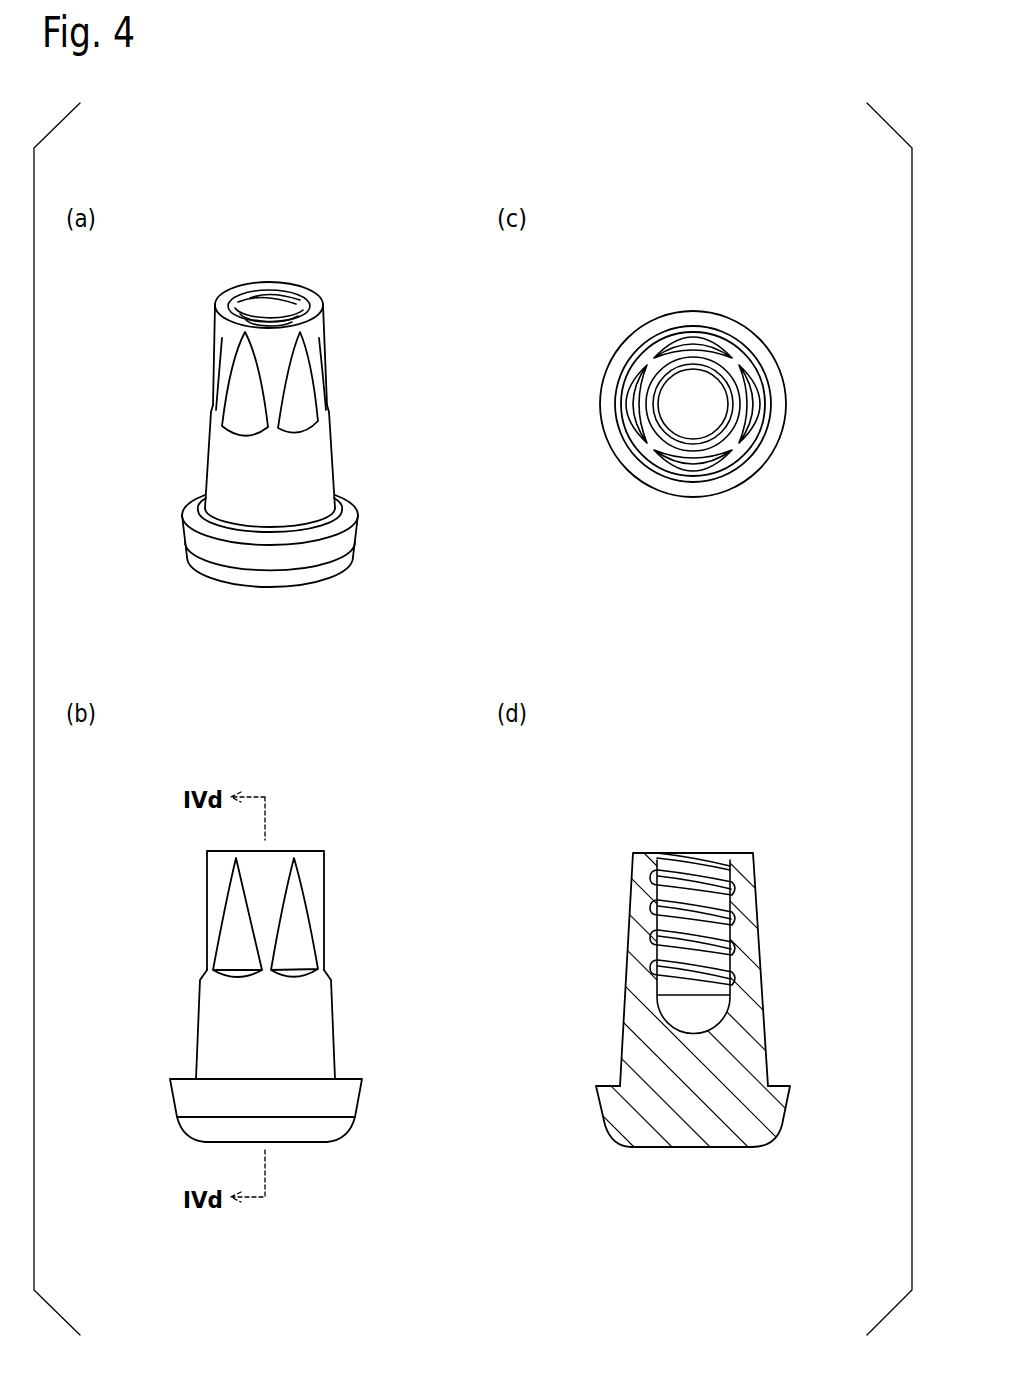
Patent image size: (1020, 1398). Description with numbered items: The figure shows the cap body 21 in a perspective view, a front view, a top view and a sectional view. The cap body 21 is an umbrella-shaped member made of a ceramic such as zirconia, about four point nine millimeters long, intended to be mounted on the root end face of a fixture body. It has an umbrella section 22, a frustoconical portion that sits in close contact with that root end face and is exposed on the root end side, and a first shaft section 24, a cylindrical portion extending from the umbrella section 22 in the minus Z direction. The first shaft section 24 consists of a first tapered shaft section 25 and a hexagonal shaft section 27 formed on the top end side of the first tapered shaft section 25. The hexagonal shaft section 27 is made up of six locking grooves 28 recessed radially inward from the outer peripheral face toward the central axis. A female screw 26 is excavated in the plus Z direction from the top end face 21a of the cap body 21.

The cap body 21 is at (558, 699).
The top end face 21a is at (748, 386).
The umbrella section 22 is at (308, 560).
The first shaft section 24 is at (558, 739).
The first tapered shaft section 25 is at (242, 477).
The female screw 26 is at (262, 308).
The hexagonal shaft section 27 is at (243, 407).
The locking grooves 28 is at (625, 400).